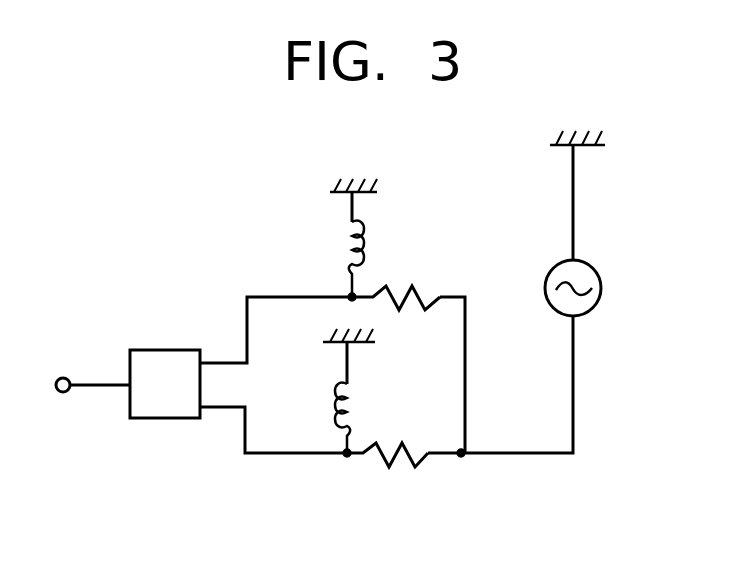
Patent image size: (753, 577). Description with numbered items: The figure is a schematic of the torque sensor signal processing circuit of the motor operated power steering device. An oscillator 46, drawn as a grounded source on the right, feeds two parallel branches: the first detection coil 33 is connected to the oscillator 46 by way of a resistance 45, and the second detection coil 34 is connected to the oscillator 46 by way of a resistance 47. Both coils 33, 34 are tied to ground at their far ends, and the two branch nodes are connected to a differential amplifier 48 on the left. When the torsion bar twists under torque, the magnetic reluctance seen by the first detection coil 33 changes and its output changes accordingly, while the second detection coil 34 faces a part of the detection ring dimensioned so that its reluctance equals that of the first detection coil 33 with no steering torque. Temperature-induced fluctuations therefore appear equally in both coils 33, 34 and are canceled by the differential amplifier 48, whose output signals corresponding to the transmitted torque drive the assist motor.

The first detection coil 33 is at (352, 400).
The second detection coil 34 is at (360, 232).
The resistance 45 is at (375, 462).
The oscillator 46 is at (598, 299).
The resistance 47 is at (425, 300).
The differential amplifier 48 is at (163, 360).